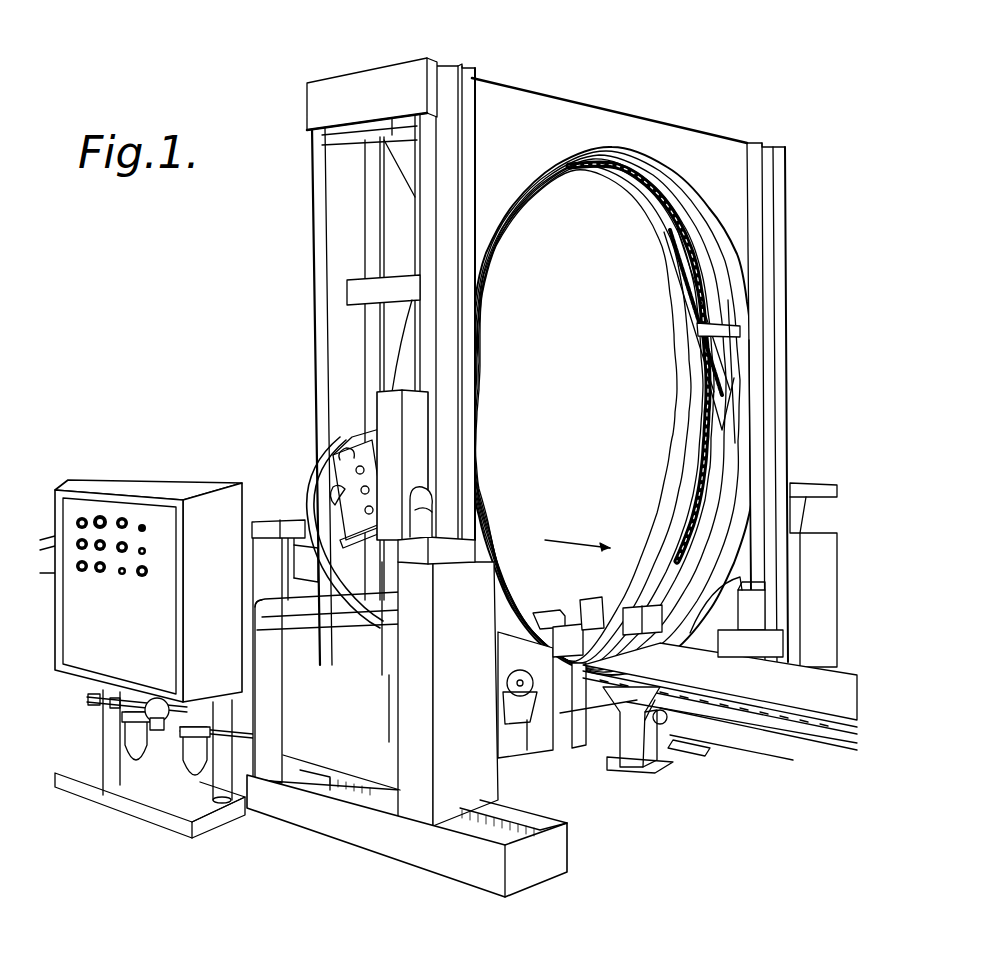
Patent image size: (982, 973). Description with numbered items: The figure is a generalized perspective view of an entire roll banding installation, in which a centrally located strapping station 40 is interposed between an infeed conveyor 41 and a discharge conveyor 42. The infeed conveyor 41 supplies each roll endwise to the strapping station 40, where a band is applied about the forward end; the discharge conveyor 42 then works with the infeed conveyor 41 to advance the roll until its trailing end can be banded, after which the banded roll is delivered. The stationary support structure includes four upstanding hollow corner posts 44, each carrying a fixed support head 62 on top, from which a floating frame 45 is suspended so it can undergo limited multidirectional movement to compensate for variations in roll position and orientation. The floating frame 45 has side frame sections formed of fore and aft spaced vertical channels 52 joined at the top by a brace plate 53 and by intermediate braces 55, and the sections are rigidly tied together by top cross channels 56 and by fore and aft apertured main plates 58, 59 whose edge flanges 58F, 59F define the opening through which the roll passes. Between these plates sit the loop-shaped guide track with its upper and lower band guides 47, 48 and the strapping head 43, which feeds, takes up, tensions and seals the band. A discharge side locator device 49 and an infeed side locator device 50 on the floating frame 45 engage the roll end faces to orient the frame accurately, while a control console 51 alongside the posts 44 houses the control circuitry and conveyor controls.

The strapping station 40 is at (308, 330).
The infeed conveyor 41 is at (42, 520).
The discharge conveyor 42 is at (820, 713).
The strapping head 43 is at (322, 454).
The corner posts 44 is at (282, 585).
The floating frame 45 is at (568, 100).
The upper band guide 47 is at (683, 232).
The lower band guide 48 is at (702, 471).
The discharge side locator device 49 is at (670, 666).
The infeed side locator device 50 is at (548, 607).
The control console 51 is at (128, 638).
The vertical channels 52 is at (318, 183).
The brace plate 53 is at (357, 82).
The intermediate braces 55 is at (358, 285).
The top cross channels 56 is at (395, 127).
The fore main plate 58 is at (400, 158).
The edge flange 58F is at (670, 315).
The aft main plate 59 is at (487, 95).
The edge flange 59F is at (754, 384).
The support head 62 is at (258, 520).